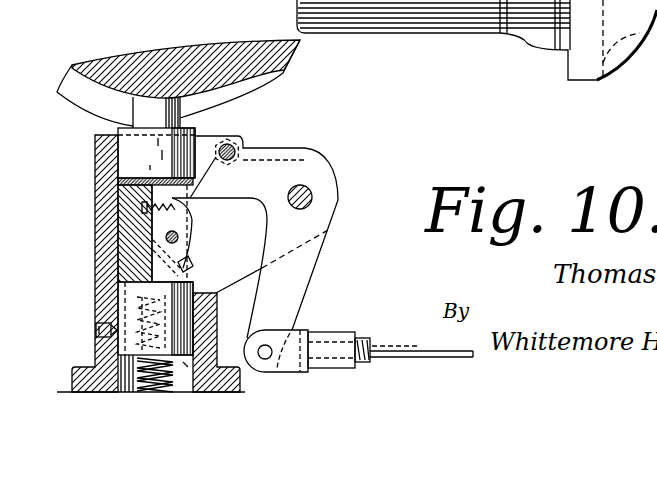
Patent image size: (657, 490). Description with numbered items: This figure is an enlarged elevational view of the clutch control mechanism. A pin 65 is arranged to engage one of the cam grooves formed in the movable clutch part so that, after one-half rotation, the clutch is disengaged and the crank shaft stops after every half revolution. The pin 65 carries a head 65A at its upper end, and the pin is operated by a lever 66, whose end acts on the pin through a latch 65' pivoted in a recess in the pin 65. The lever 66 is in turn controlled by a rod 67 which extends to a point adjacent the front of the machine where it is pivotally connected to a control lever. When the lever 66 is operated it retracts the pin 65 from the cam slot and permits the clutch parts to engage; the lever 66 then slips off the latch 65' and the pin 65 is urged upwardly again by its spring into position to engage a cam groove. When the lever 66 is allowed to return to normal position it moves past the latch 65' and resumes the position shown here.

The cap / knob head 65A is at (292, 60).
The pin 65 is at (216, 140).
The latch 65' is at (196, 233).
The lever 66 is at (312, 176).
The rod 67 is at (418, 347).